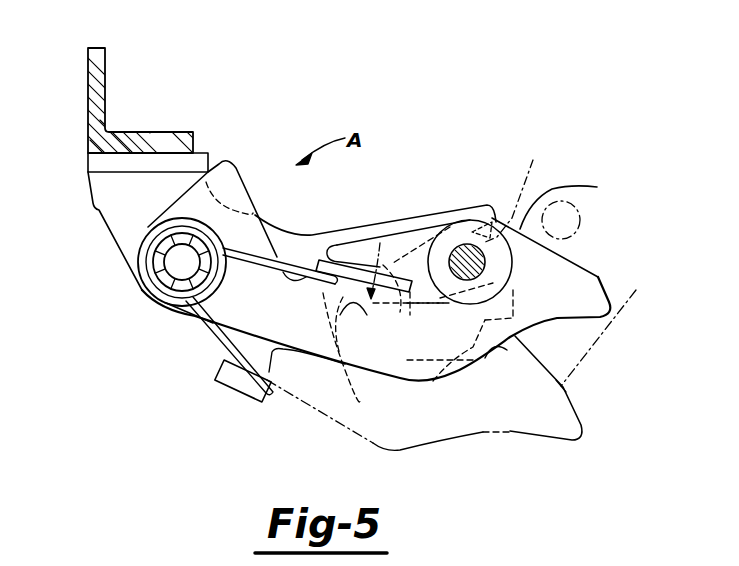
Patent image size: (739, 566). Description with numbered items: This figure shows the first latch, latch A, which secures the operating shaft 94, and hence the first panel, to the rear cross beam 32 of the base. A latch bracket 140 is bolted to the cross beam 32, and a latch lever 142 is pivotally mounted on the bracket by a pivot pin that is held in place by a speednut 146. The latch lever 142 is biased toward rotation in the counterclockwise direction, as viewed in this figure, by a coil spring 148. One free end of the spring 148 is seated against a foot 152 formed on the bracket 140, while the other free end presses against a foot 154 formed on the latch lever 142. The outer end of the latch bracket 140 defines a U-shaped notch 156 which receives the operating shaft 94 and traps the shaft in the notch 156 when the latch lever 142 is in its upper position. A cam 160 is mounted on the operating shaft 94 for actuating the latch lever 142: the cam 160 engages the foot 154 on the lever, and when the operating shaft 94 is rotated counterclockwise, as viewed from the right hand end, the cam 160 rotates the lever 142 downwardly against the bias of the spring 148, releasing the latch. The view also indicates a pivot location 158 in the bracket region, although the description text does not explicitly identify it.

The rear cross beam 32 is at (106, 84).
The operating shaft 94 is at (465, 246).
The latch bracket 140 is at (93, 210).
The latch lever 142 is at (583, 280).
The speednut 146 is at (144, 289).
The coil spring 148 is at (207, 328).
The foot 152 is at (232, 390).
The foot 154 is at (413, 346).
The U-shaped notch 156 is at (533, 161).
The pivot hole 158 is at (575, 187).
The cam 160 is at (350, 243).